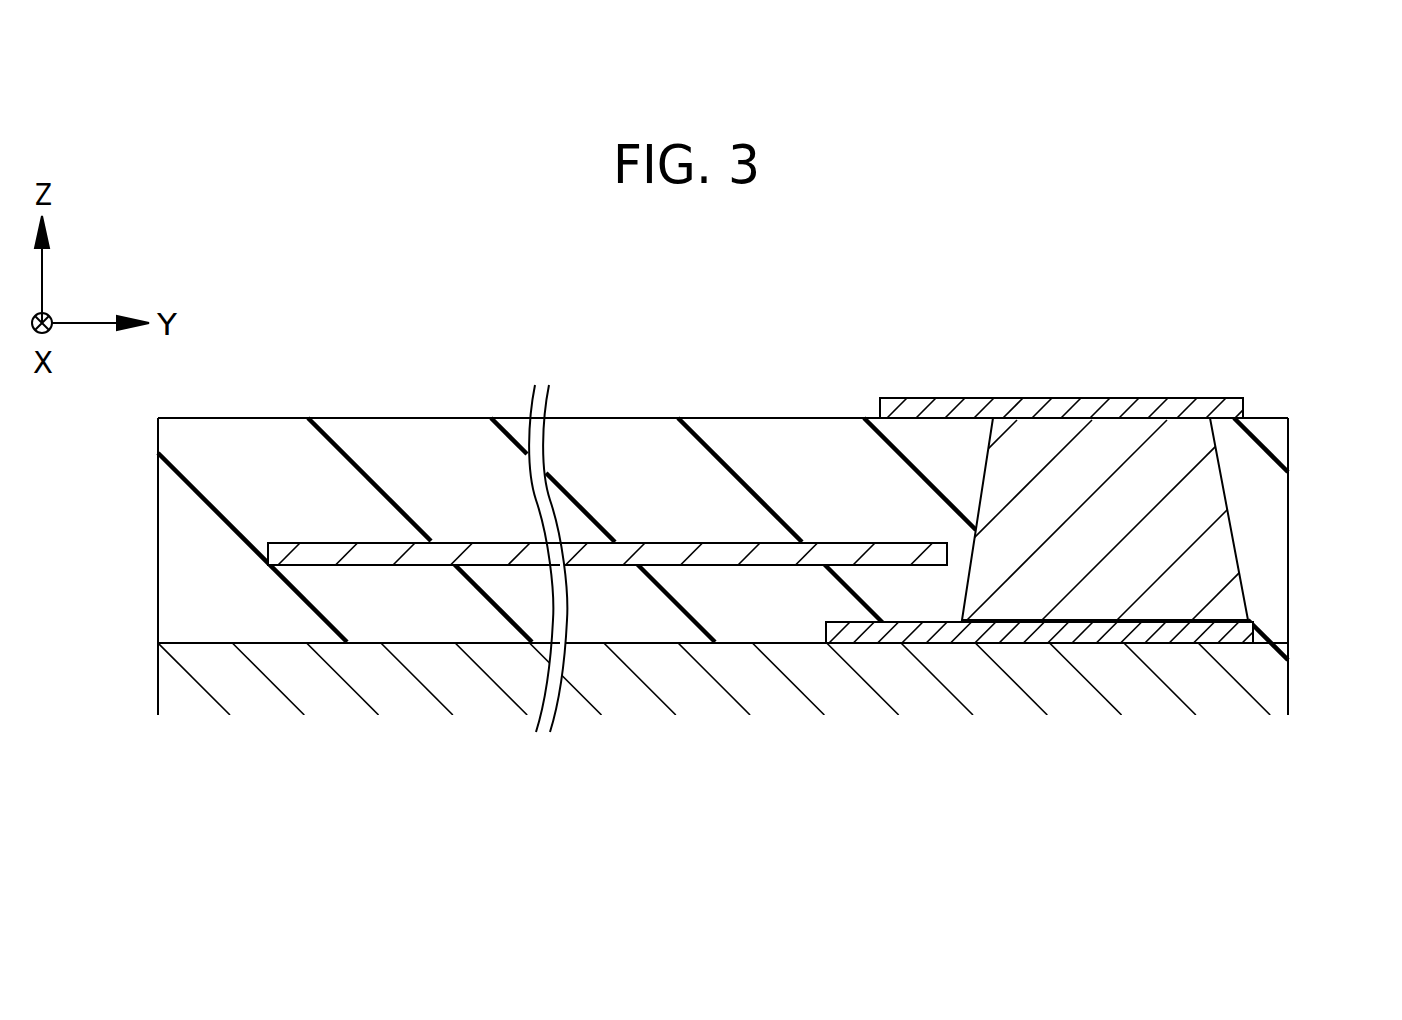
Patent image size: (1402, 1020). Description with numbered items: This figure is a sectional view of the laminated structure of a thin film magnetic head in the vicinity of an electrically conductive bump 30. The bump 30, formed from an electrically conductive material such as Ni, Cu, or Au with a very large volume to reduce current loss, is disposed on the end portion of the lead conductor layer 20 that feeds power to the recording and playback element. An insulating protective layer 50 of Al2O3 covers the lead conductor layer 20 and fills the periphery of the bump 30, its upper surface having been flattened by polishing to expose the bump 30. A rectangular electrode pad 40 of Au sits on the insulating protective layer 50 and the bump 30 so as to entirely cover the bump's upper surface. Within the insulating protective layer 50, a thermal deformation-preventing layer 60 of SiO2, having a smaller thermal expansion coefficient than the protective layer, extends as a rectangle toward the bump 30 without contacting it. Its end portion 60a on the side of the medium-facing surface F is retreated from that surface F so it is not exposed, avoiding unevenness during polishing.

The lead conductor layer 20 is at (1240, 633).
The electrically conductive bump 30 is at (1135, 535).
The electrode pad 40 is at (1090, 406).
The insulating protective layer 50 is at (760, 442).
The thermal deformation-preventing layer 60 is at (640, 546).
The end portion 60a is at (306, 546).
The medium-facing surface F is at (177, 537).